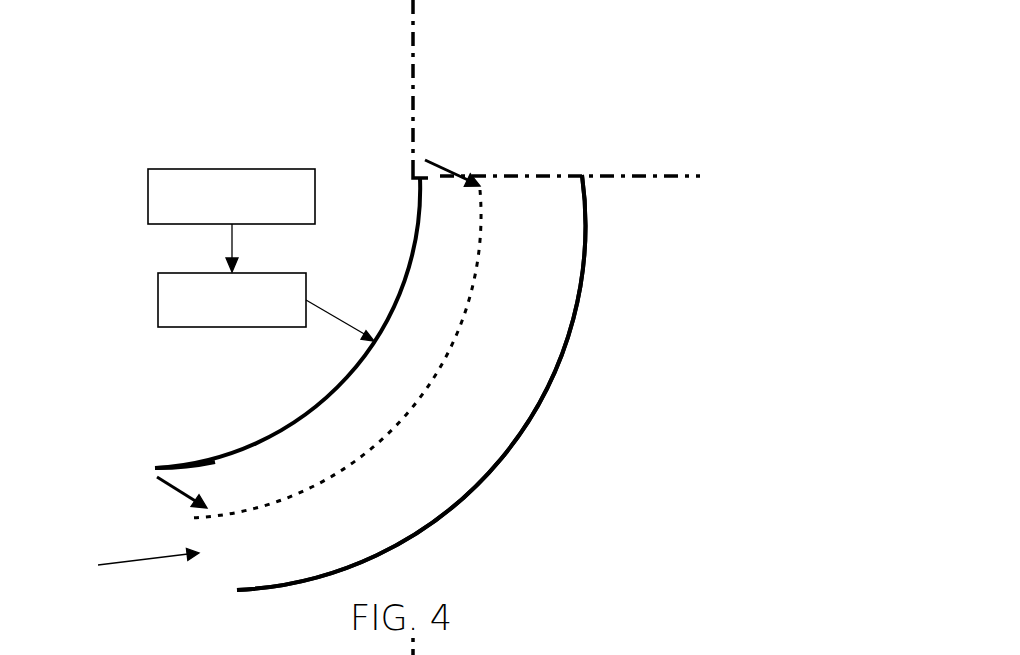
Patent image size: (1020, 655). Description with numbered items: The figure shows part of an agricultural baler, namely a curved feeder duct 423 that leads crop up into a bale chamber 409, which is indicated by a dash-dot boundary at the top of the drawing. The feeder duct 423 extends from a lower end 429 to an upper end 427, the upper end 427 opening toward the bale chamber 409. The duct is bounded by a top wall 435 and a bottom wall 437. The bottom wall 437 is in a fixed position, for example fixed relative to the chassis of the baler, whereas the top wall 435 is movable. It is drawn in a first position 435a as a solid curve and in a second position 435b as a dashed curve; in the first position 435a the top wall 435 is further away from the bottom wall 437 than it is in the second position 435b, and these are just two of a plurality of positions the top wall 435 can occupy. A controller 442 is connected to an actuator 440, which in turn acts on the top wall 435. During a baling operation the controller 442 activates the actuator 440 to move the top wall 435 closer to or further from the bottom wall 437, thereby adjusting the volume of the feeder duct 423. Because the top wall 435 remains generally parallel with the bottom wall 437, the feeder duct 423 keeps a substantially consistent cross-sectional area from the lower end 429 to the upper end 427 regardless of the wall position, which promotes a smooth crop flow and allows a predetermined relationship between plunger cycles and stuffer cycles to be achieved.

The bale chamber 409 is at (413, 37).
The upper end 427 is at (529, 150).
The controller 442 is at (148, 195).
The actuator 440 is at (158, 297).
The top wall 435 is at (312, 408).
The first position 435a is at (212, 462).
The second position 435b is at (333, 482).
The bottom wall 437 is at (580, 285).
The feeder duct 423 is at (498, 360).
The lower end 429 is at (123, 562).